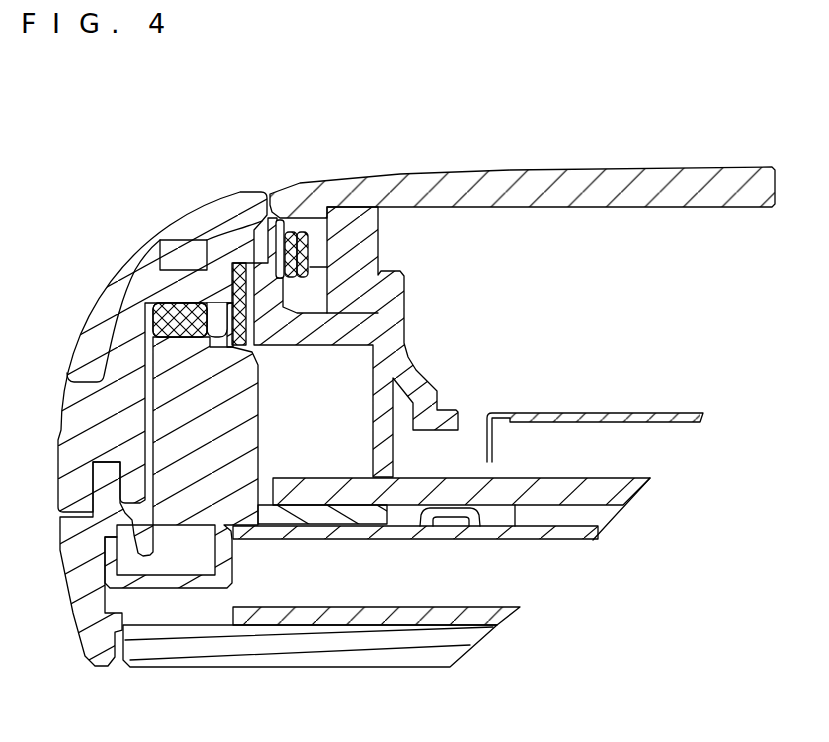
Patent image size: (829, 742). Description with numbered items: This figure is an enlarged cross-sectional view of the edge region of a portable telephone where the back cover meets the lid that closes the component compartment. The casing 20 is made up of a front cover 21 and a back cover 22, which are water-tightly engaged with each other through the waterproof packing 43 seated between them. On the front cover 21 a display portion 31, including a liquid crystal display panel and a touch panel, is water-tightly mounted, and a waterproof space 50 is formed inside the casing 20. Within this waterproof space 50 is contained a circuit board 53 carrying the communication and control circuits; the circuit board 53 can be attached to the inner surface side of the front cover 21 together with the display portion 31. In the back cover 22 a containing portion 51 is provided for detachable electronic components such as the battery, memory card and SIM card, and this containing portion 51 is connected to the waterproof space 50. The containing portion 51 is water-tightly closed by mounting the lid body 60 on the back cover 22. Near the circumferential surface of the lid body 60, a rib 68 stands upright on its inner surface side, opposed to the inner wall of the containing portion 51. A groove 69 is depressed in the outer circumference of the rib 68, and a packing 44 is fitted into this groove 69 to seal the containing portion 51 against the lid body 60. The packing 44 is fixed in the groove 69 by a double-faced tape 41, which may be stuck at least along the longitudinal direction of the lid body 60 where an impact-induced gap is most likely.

The casing 20 is at (156, 428).
The front cover 21 is at (90, 630).
The back cover 22 is at (118, 400).
The display portion 31 is at (338, 653).
The double-faced tape 41 is at (317, 267).
The waterproof packing 43 is at (165, 315).
The packing 44 is at (273, 222).
The waterproof space 50 is at (317, 453).
The containing portion 51 is at (588, 307).
The circuit board 53 is at (550, 493).
The lid body 60 is at (422, 197).
The rib 68 is at (317, 248).
The groove 69 is at (281, 230).